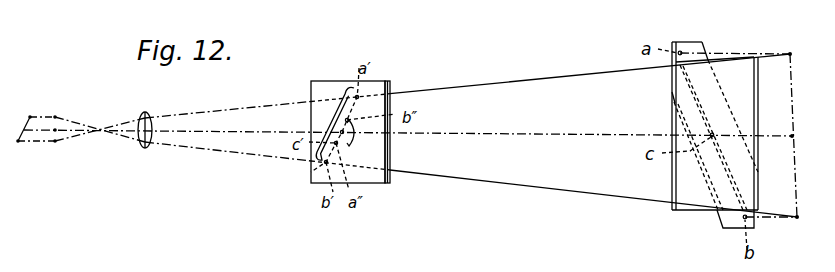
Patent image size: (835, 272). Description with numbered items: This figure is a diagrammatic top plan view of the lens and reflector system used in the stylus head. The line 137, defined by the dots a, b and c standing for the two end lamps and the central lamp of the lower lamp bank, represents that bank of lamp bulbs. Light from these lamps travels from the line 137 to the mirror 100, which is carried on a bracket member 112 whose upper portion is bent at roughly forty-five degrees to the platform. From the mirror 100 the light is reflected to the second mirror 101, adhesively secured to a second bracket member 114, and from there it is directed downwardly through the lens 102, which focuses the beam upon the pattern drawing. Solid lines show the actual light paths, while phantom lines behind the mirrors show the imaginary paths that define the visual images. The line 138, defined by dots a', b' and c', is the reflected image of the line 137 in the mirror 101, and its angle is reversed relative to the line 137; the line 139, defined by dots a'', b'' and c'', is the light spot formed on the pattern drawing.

The mirror 100 is at (701, 41).
The second mirror 101 is at (391, 83).
The lens 102 is at (143, 150).
The bracket member 112 is at (694, 205).
The second bracket member 114 is at (311, 172).
The line representing the lower bank of lamp bulbs 137 is at (694, 126).
The line representing the reflected image of line 137 in mirror 101 138 is at (322, 128).
The projected light spot 139 is at (336, 143).